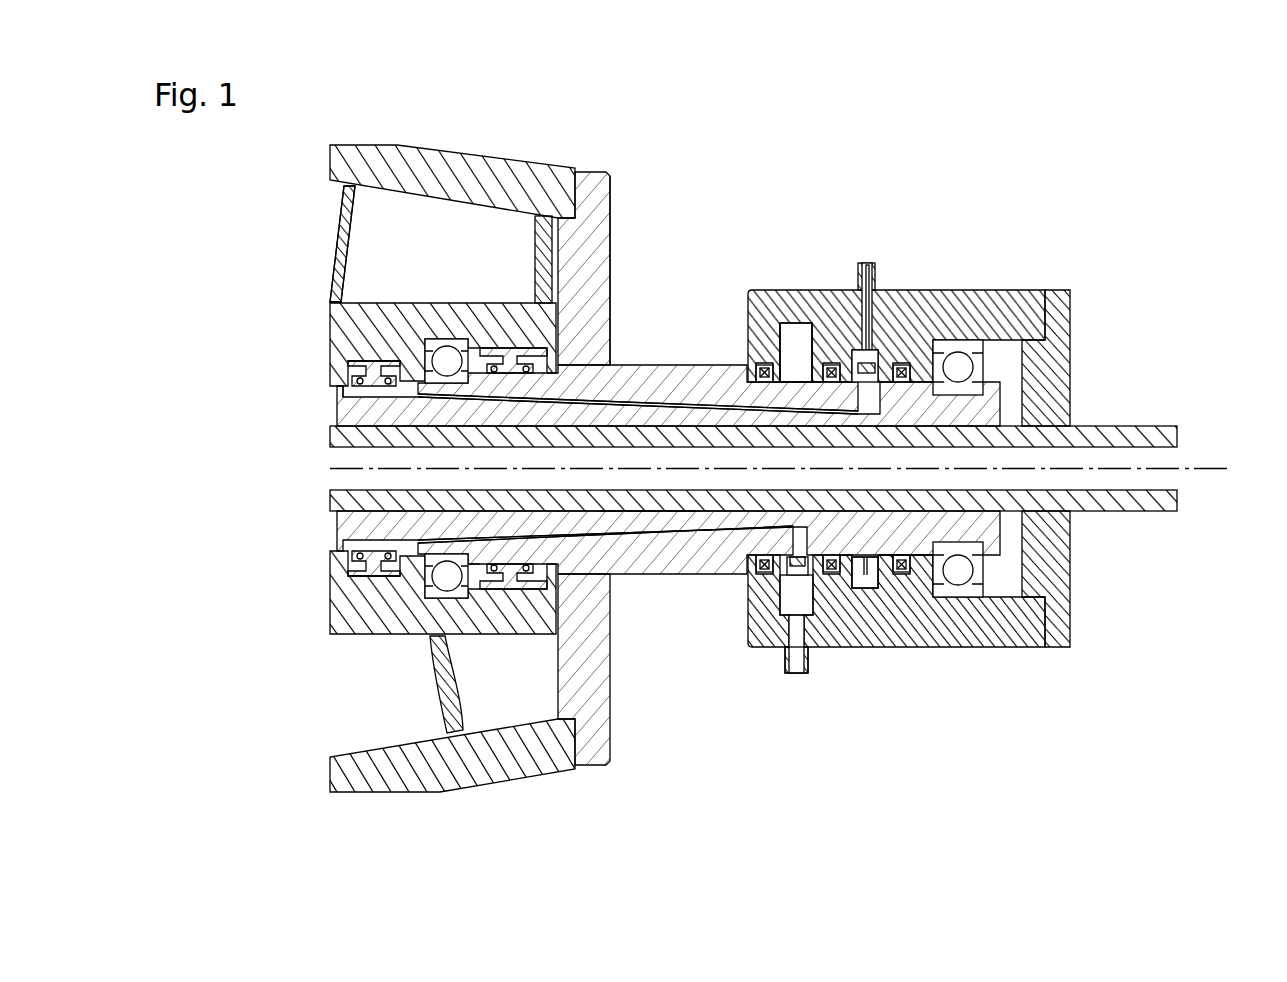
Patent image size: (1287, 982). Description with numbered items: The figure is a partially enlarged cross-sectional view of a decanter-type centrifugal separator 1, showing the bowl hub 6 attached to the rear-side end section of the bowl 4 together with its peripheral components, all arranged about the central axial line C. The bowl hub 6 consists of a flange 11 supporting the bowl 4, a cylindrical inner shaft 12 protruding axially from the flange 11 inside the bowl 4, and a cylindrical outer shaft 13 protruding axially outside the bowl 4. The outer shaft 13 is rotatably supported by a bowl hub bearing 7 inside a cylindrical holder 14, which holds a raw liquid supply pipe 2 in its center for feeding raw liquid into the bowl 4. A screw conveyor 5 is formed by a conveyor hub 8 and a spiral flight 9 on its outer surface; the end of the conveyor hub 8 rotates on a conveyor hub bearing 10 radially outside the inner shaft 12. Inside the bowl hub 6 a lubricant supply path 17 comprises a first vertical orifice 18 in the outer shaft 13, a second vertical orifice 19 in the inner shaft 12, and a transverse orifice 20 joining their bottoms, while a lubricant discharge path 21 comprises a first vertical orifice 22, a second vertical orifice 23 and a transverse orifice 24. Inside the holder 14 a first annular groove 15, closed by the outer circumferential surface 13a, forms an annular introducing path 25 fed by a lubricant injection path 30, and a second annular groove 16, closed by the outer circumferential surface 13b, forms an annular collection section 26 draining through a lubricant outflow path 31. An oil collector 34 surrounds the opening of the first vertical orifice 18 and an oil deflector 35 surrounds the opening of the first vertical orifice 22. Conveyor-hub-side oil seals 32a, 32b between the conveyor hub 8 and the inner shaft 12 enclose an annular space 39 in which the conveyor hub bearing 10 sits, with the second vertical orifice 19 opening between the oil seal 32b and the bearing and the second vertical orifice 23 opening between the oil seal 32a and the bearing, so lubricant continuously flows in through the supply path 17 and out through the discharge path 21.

The decanter-type centrifugal separator 1 is at (1047, 178).
The raw liquid supply pipe 2 is at (1094, 478).
The bowl 4 is at (520, 153).
The screw conveyor 5 is at (331, 234).
The bowl hub 6 is at (605, 166).
The bowl hub bearing 7 is at (959, 353).
The conveyor hub 8 is at (390, 300).
The spiral flight 9 is at (331, 204).
The conveyor hub bearing 10 is at (451, 354).
The flange 11 is at (612, 217).
The inner shaft 12 is at (337, 412).
The outer shaft 13 is at (1000, 403).
The outer circumferential surface 13a is at (872, 580).
The outer circumferential surface 13b is at (805, 332).
The holder 14 is at (1030, 290).
The first annular groove 15 is at (893, 600).
The second annular groove 16 is at (788, 332).
The lubricant supply path 17 is at (649, 400).
The first vertical orifice 18 is at (905, 372).
The second vertical orifice 19 is at (410, 392).
The transverse orifice 20 is at (718, 407).
The lubricant discharge path 21 is at (636, 540).
The first vertical orifice 22 is at (787, 577).
The second vertical orifice 23 is at (479, 565).
The transverse orifice 24 is at (669, 540).
The annular introducing path 25 is at (846, 372).
The annular collection section 26 is at (801, 365).
The lubricant injection path 30 is at (870, 288).
The lubricant outflow path 31 is at (797, 650).
The conveyor-hub-side oil seal 32a is at (514, 355).
The conveyor-hub-side oil seal 32b is at (350, 364).
The oil collector 34 is at (880, 368).
The oil deflector 35 is at (787, 603).
The annular space 39 is at (405, 350).
The central axial line C is at (1190, 468).